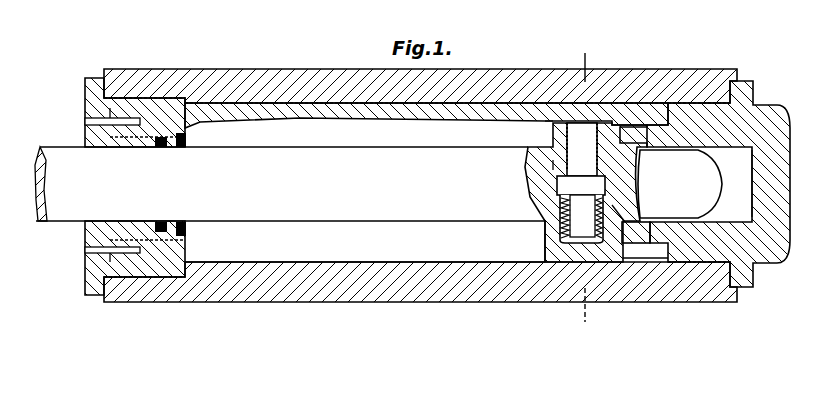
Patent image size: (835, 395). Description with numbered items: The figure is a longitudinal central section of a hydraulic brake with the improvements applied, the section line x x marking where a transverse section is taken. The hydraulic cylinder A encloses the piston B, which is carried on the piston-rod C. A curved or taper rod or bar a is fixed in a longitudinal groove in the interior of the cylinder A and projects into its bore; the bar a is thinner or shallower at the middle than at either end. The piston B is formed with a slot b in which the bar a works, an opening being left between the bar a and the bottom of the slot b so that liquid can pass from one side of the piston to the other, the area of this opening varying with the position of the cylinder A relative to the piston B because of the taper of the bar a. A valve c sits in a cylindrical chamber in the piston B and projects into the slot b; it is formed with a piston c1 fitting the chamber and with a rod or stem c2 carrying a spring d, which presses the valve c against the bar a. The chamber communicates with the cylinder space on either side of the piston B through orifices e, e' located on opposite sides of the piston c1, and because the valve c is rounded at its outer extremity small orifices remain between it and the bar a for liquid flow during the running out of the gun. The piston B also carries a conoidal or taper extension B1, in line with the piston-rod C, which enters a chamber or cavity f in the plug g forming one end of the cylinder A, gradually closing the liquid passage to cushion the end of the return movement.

The hydraulic cylinder A is at (420, 189).
The curved or taper rod or bar a is at (426, 120).
The piston B is at (586, 192).
The conoidal or taper extension B1 is at (680, 184).
The piston-rod C is at (290, 184).
The valve c is at (582, 149).
The piston of the valve c1 is at (581, 185).
The rod or stem c2 is at (581, 219).
The slot b is at (550, 124).
The orifice e is at (539, 147).
The orifice e' is at (636, 234).
The spring d is at (548, 226).
The chamber or cavity f is at (743, 183).
The plug g is at (715, 184).
The section line x is at (582, 188).